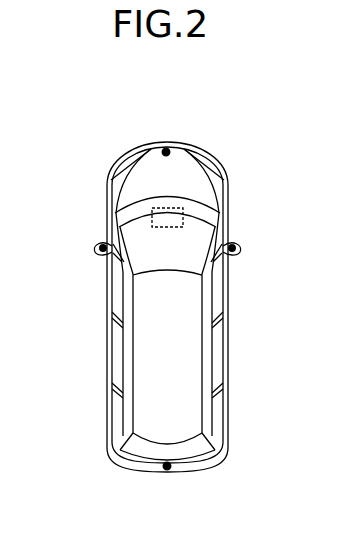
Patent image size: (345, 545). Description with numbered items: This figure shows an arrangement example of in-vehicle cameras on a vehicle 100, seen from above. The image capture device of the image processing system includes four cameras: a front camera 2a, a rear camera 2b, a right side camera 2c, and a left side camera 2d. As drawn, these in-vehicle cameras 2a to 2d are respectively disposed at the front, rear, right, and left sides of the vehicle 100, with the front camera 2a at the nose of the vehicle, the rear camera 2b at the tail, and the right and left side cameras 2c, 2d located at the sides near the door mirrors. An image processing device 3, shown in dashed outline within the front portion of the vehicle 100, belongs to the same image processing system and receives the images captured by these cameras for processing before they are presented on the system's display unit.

The vehicle 100 is at (107, 337).
The front camera 2a is at (166, 148).
The rear camera 2b is at (167, 470).
The right side camera 2c is at (235, 248).
The left side camera 2d is at (100, 248).
The image processing device 3 is at (168, 206).